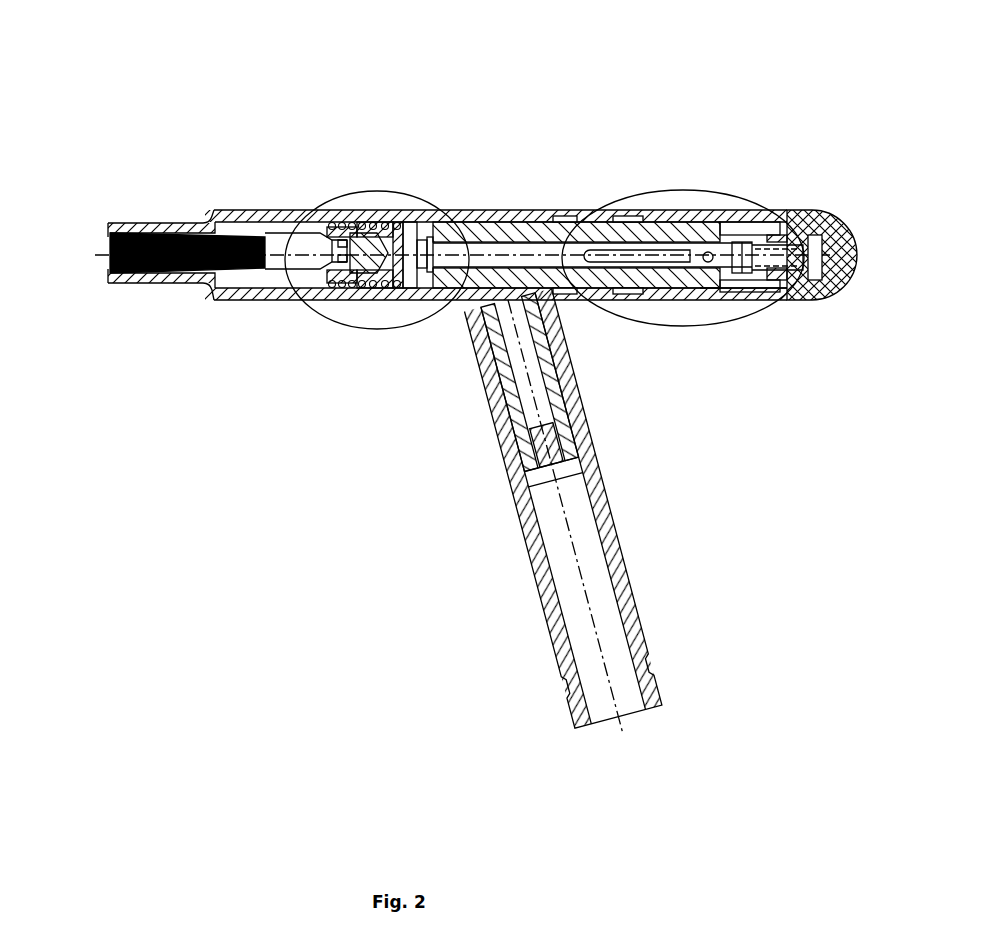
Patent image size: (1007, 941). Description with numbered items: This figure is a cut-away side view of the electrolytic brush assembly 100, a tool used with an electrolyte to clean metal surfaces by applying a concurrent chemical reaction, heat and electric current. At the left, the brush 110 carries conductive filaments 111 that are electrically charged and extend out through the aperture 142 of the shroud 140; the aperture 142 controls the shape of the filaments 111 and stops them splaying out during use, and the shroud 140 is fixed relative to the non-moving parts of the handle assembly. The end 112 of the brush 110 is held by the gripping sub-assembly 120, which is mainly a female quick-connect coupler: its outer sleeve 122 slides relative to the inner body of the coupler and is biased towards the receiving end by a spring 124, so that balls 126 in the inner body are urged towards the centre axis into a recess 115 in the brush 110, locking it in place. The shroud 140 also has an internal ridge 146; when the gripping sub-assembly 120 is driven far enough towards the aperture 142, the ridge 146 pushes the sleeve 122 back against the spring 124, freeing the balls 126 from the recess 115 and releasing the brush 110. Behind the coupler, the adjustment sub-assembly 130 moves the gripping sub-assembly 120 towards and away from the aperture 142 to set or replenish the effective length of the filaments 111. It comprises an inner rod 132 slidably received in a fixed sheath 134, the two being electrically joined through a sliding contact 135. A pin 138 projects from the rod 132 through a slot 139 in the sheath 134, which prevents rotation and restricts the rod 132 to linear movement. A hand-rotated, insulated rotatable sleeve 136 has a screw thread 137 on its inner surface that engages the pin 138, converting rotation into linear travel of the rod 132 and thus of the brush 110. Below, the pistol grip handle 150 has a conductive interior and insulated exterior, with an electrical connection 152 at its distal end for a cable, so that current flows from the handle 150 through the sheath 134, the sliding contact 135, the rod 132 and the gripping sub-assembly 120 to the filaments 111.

The electrolytic brush assembly 100 is at (512, 80).
The brush 110 is at (232, 232).
The conductive filaments 111 is at (107, 272).
The end of the brush 112 is at (361, 249).
The recess 115 is at (341, 251).
The gripping sub-assembly 120 is at (378, 330).
The outer sleeve 122 is at (373, 280).
The spring 124 is at (386, 219).
The balls 126 is at (344, 271).
The adjustment sub-assembly 130 is at (687, 327).
The inner rod 132 is at (686, 255).
The sheath 134 is at (684, 233).
The sliding contact 135 is at (736, 267).
The rotatable sleeve 136 is at (749, 303).
The screw thread 137 is at (609, 225).
The pin 138 is at (703, 263).
The slot 139 is at (587, 255).
The shroud 140 is at (258, 301).
The aperture 142 is at (107, 238).
The ridge 146 is at (225, 293).
The pistol grip handle 150 is at (515, 491).
The electrical connection 152 is at (547, 443).